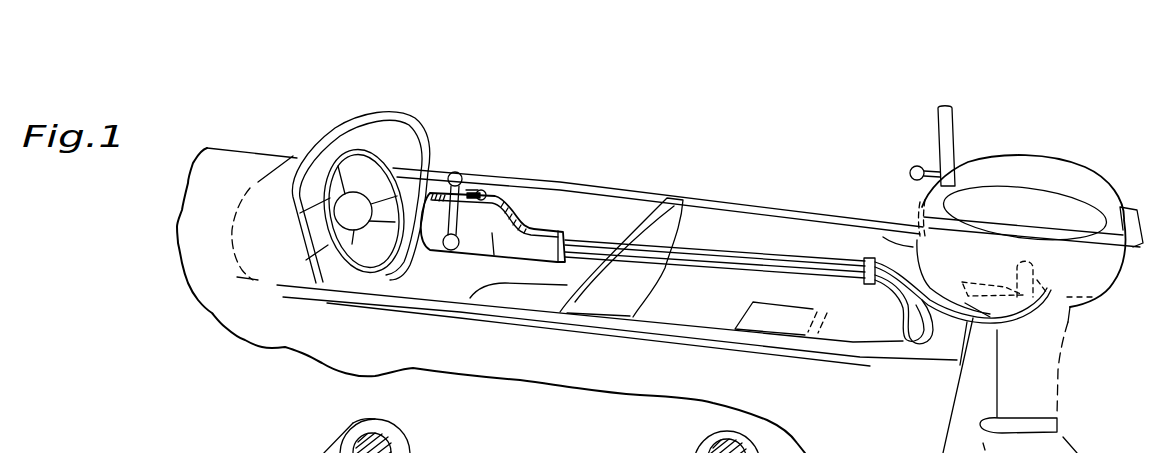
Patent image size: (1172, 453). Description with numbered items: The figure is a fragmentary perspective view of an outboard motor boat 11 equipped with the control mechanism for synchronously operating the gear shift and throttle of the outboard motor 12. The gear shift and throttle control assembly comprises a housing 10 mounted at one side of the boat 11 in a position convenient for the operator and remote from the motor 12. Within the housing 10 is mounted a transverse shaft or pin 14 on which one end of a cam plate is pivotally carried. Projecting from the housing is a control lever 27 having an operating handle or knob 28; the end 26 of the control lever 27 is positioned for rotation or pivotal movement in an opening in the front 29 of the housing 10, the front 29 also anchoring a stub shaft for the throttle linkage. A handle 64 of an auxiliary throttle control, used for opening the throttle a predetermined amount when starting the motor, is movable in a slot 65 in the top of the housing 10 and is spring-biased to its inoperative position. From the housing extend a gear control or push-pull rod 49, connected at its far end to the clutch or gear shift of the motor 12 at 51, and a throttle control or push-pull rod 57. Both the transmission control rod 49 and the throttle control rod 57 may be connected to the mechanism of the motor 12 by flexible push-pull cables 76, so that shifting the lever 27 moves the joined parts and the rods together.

The housing 10 is at (530, 199).
The boat 11 is at (574, 368).
The motor 12 is at (1087, 169).
The transverse shaft or pin 14 is at (397, 436).
The end of control lever 26 is at (456, 249).
The control lever 27 is at (464, 193).
The operating handle or knob 28 is at (456, 172).
The front of housing 29 is at (493, 236).
The control or push-pull rod 49 is at (731, 258).
The clutch or gear shift connection 51 is at (985, 280).
The control or push-pull rod 57 is at (720, 261).
The handle 64 is at (487, 192).
The slot 65 is at (470, 194).
The push-pull cable 76 is at (902, 292).